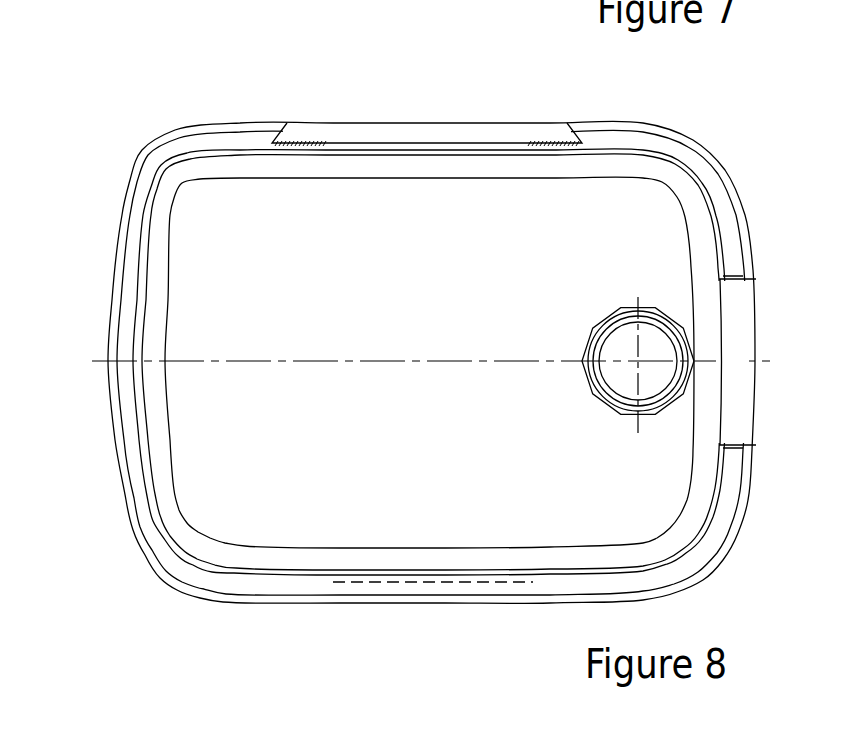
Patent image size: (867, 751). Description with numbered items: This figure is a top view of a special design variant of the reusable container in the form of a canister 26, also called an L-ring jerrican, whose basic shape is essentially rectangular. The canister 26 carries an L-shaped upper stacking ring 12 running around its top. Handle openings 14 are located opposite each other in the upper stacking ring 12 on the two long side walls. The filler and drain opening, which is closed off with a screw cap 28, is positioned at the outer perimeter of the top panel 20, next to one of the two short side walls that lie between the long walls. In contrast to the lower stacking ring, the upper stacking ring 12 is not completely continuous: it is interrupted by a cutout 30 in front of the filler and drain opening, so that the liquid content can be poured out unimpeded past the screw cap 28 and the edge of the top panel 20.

The canister 26 is at (153, 117).
The upper stacking ring 12 is at (705, 182).
The handle openings 14 is at (413, 140).
The top panel 20 is at (267, 413).
The screw cap 28 is at (653, 348).
The cutout 30 is at (738, 400).